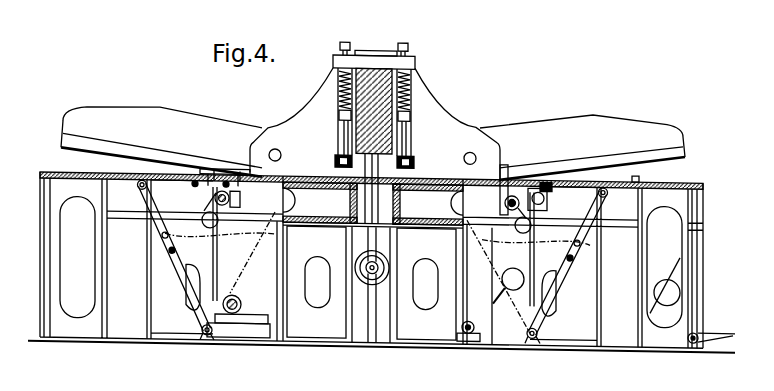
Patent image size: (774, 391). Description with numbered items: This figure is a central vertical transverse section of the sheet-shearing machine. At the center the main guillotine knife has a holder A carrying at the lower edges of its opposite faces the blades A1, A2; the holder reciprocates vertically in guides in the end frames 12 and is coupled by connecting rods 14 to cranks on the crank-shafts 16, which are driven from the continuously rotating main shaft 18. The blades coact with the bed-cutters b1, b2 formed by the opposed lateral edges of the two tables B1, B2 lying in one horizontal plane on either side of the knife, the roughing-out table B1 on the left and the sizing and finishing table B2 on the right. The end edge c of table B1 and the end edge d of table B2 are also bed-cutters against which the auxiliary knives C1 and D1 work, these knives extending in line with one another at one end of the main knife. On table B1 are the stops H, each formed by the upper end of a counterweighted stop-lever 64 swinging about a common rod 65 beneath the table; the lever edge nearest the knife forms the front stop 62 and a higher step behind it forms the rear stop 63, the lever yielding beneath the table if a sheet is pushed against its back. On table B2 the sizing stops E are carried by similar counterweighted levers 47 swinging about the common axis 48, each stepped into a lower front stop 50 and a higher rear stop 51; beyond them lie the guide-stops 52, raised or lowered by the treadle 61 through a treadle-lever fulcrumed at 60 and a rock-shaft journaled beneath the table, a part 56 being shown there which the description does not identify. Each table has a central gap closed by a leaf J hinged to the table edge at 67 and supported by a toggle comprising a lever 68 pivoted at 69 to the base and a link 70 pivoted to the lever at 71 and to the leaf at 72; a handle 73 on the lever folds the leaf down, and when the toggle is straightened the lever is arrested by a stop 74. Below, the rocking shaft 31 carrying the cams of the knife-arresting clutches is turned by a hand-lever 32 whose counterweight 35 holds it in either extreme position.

The knife holder A is at (374, 64).
The end frames 12 is at (430, 110).
The auxiliary knife C1 is at (165, 98).
The auxiliary knife D1 is at (577, 109).
The roughing out table B1 is at (56, 172).
The sizing and finishing table B2 is at (690, 173).
The pairs of stops H is at (206, 170).
The rear stop 63 is at (216, 166).
The front stop 62 is at (240, 166).
The end edge c is at (275, 145).
The end edge d is at (467, 146).
The blade A1 is at (352, 146).
The blade A2 is at (396, 145).
The front stop 50 is at (505, 164).
The rear stop 51 is at (530, 165).
The sizing stops E is at (546, 172).
The leaf J is at (118, 176).
The front guide stop 52 is at (629, 174).
The link pivot 72 is at (138, 185).
The leaf hinge 67 is at (185, 187).
The counterweighted stop-lever 64 is at (214, 197).
The rod 65 is at (240, 196).
The toggle link 70 is at (155, 209).
The link pivot 71 is at (162, 235).
The handle 73 is at (169, 250).
The toggle lever 68 is at (186, 294).
The lever pivot 69 is at (201, 325).
The stop 74 is at (201, 331).
The main shaft 18 is at (242, 298).
The bed-cutter b1 is at (350, 198).
The bed-cutter b2 is at (428, 204).
The connecting rod 14 is at (351, 226).
The crank-shaft 16 is at (380, 262).
The rocking shaft 31 is at (468, 314).
The common axis 48 is at (504, 200).
The counterweighted stop-lever 47 is at (521, 200).
The counterweight 35 is at (513, 279).
The hand-lever 32 is at (503, 301).
The disc 56 is at (665, 285).
The treadle-lever fulcrum 60 is at (688, 327).
The treadle 61 is at (718, 318).